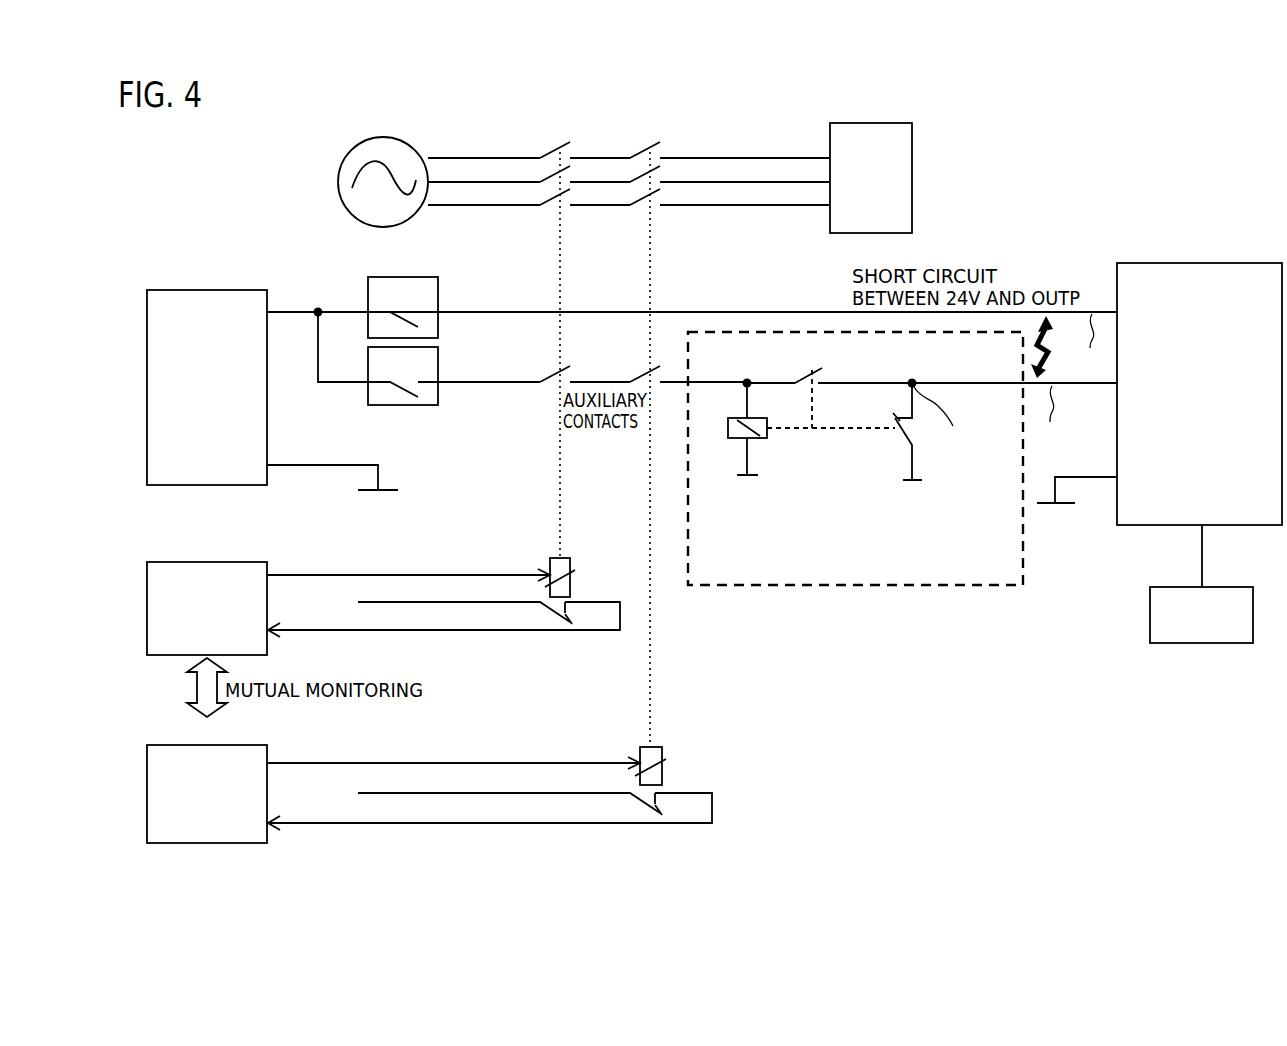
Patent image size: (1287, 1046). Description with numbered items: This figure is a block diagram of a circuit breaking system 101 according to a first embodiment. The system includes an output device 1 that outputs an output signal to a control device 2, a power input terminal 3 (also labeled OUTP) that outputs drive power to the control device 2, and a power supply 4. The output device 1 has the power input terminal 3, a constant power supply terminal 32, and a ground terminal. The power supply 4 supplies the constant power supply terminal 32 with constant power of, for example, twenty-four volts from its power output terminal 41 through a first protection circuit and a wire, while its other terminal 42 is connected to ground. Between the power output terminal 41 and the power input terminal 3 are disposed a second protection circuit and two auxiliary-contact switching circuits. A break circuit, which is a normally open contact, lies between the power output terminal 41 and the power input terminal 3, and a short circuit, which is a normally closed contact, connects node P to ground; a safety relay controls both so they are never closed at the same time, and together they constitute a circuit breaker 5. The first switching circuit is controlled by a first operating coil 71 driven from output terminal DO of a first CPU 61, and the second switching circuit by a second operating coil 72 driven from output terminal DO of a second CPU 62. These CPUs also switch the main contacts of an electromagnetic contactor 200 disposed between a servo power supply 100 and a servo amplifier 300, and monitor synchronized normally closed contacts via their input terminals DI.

The output device 1 is at (1237, 263).
The control device 2 is at (1150, 628).
The power input terminal 3 is at (1116, 388).
The power supply 4 is at (225, 290).
The circuit breaker 5 is at (902, 491).
The constant power supply terminal 32 is at (1116, 308).
The power output terminal 41 is at (270, 311).
The terminal 42 is at (268, 466).
The first CPU 61 is at (270, 566).
The second CPU 62 is at (270, 749).
The first operating coil 71 is at (572, 578).
The second operating coil 72 is at (662, 764).
The servo power supply 100 is at (418, 152).
The circuit breaking system 101 is at (1050, 176).
The electromagnetic contactor 200 is at (663, 148).
The servo amplifier 300 is at (912, 175).